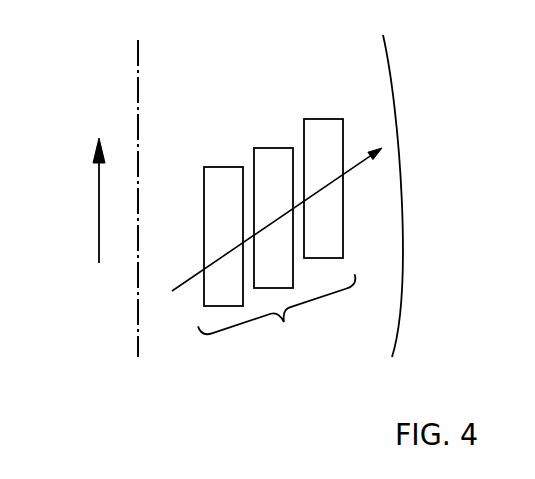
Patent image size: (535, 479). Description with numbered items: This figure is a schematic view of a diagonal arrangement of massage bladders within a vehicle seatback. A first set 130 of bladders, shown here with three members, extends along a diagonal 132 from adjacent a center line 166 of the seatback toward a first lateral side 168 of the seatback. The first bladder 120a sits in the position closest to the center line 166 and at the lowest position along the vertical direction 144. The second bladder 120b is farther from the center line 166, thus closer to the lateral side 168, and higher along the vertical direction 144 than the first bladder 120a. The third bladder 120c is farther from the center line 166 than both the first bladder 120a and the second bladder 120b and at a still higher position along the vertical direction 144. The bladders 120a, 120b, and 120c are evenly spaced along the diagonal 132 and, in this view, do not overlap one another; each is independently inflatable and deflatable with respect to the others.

The first bladder 120a is at (219, 178).
The second bladder 120b is at (270, 156).
The third bladder 120c is at (318, 128).
The first set of bladders 130 is at (280, 314).
The diagonal 132 is at (357, 167).
The vertical direction 144 is at (98, 205).
The center line 166 is at (138, 78).
The first lateral side 168 is at (397, 87).